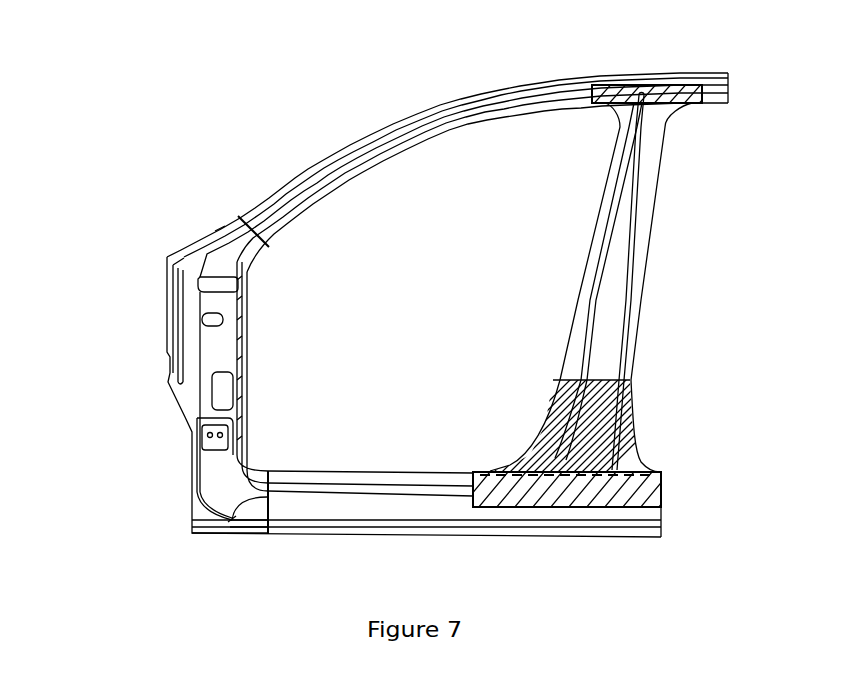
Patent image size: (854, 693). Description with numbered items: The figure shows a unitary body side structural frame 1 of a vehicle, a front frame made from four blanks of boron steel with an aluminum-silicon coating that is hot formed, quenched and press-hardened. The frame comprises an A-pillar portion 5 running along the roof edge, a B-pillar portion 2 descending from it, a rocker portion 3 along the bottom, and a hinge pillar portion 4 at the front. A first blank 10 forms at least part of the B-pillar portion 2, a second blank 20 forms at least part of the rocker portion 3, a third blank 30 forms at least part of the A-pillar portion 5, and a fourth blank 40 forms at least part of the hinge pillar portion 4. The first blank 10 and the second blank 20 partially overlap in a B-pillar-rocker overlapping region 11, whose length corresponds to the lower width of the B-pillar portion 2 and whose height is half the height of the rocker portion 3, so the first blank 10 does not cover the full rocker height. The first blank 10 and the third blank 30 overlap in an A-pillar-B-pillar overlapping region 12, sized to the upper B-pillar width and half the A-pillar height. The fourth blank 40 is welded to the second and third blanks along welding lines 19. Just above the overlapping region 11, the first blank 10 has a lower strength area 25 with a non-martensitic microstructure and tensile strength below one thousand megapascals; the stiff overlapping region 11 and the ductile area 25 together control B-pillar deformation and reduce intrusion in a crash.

The unitary body side structural frame 1 is at (410, 46).
The B-pillar portion 2 is at (722, 248).
The rocker portion 3 is at (421, 554).
The hinge pillar portion 4 is at (131, 393).
The A-pillar portion 5 is at (290, 153).
The first blank 10 is at (640, 310).
The B-pillar-rocker overlapping region 11 is at (655, 472).
The A-pillar-B-pillar overlapping region 12 is at (700, 104).
The welding lines 19 is at (220, 233).
The second blank 20 is at (340, 503).
The lower strength area 25 is at (628, 402).
The third blank 30 is at (486, 101).
The fourth blank 40 is at (200, 346).